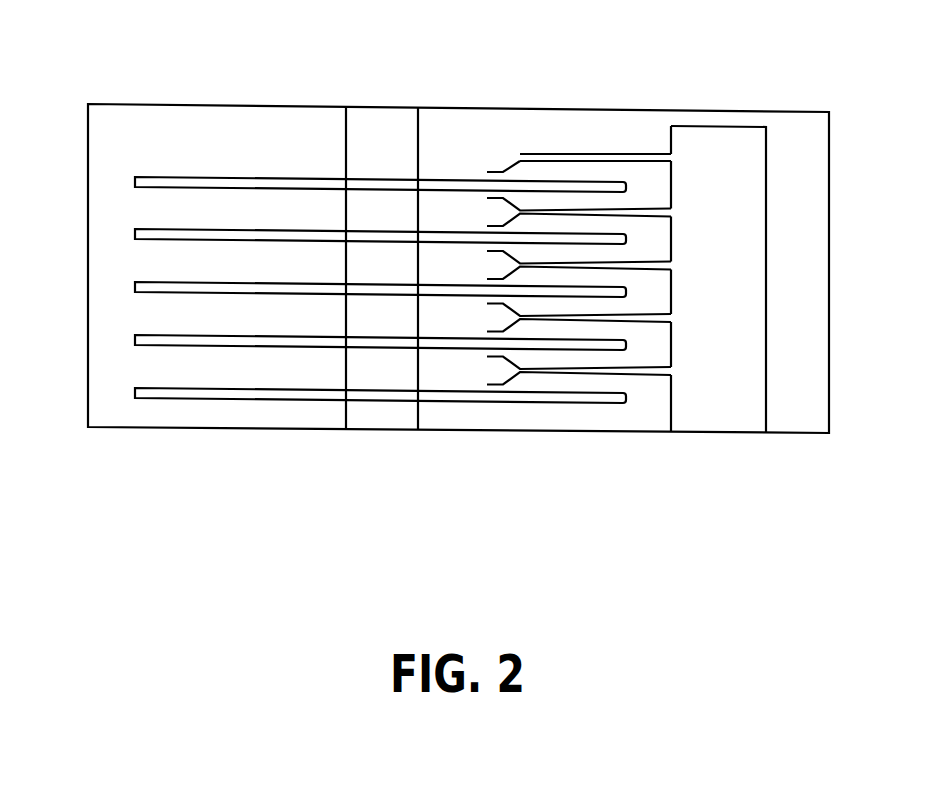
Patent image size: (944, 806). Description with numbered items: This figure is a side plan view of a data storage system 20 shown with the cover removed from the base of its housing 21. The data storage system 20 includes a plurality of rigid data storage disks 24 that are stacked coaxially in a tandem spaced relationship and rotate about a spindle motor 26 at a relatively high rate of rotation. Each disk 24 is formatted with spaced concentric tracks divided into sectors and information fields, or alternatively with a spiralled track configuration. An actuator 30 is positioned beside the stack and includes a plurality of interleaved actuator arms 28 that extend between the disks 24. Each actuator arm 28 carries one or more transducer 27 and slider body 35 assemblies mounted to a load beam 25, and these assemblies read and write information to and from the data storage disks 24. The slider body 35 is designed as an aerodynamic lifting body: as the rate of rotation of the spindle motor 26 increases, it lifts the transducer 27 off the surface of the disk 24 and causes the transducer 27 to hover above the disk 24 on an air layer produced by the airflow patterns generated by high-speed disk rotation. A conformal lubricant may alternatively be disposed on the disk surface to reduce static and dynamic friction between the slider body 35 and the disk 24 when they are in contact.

The data storage system 20 is at (730, 78).
The housing 21 is at (829, 313).
The data storage disks 24 is at (133, 180).
The load beam 25 is at (512, 164).
The spindle motor 26 is at (372, 420).
The transducer 27 is at (487, 173).
The actuator arms 28 is at (577, 153).
The actuator 30 is at (717, 405).
The slider body 35 is at (487, 172).